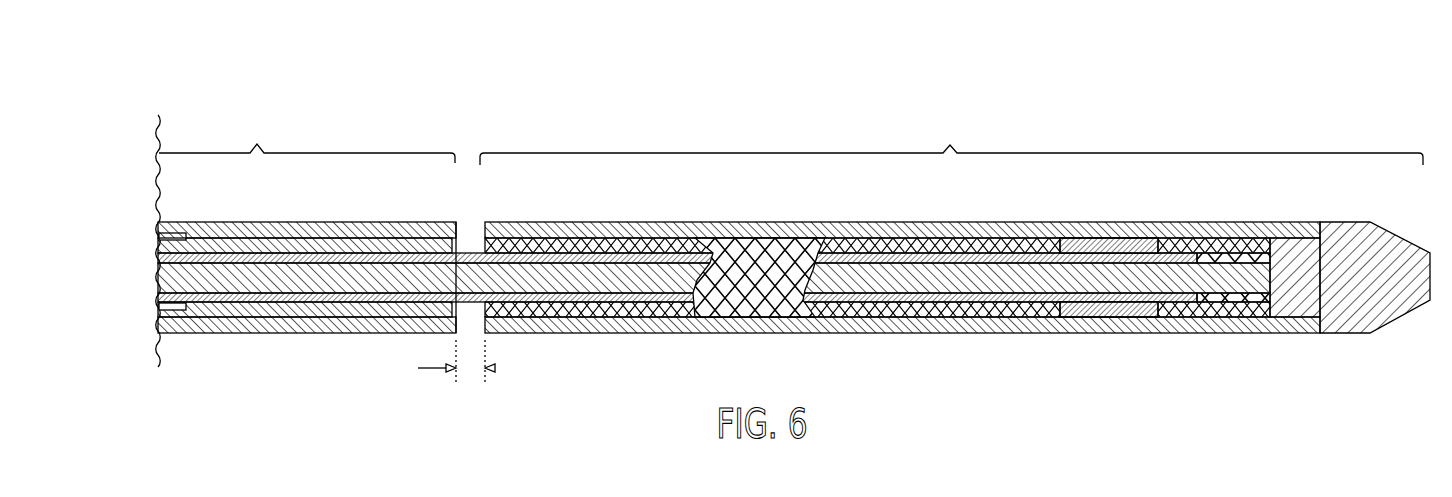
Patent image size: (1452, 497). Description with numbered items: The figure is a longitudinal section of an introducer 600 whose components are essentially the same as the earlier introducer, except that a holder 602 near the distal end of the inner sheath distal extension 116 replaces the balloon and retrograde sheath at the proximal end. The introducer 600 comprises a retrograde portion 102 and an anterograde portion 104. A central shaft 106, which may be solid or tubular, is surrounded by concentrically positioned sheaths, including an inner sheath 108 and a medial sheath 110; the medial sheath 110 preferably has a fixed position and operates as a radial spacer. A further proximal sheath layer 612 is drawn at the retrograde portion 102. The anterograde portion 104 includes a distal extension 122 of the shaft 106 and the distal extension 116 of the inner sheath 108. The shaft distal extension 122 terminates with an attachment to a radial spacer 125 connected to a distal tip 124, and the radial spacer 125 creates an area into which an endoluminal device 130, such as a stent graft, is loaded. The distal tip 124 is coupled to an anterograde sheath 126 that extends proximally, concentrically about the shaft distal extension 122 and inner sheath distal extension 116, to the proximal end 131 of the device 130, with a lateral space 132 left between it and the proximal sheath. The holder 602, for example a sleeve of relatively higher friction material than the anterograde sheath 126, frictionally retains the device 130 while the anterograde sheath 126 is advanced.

The introducer embodiment 600 is at (1190, 106).
The retrograde portion 102 is at (307, 140).
The anterograde portion 104 is at (951, 141).
The shaft 106 is at (173, 276).
The inner sheath 108 is at (160, 256).
The medial sheath 110 is at (160, 312).
The proximal outer sheath 612 is at (215, 333).
The inner sheath distal extension 116 is at (535, 247).
The shaft distal extension 122 is at (898, 288).
The endoluminal device 130 is at (763, 300).
The proximal end of device 131 is at (462, 238).
The lateral space 132 is at (495, 368).
The holder 602 is at (1103, 248).
The anterograde sheath 126 is at (1183, 333).
The radial spacer 125 is at (1290, 310).
The distal tip 124 is at (1393, 328).